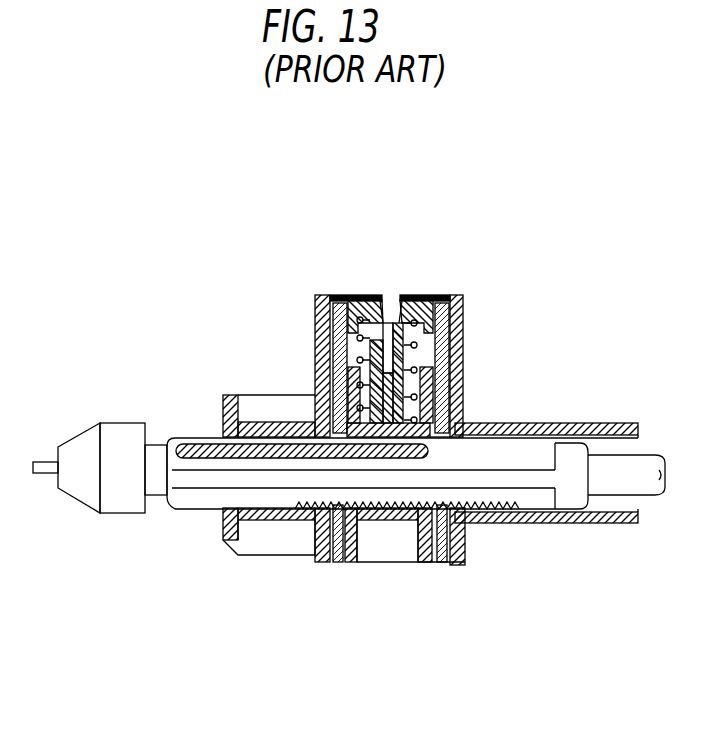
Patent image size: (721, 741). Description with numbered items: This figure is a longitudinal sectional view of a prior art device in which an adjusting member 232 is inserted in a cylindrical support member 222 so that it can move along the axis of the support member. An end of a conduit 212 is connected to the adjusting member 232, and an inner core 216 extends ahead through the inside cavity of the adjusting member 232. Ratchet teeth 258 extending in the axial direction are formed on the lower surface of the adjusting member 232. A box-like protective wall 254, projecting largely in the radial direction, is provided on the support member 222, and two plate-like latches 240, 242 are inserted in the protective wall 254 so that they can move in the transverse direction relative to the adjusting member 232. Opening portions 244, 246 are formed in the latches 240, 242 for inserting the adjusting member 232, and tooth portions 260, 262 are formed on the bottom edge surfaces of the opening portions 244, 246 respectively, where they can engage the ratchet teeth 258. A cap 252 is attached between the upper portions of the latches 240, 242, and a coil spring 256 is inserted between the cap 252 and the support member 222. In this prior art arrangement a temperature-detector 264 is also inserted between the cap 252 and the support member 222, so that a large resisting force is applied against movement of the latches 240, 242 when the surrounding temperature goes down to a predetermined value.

The conduit 212 is at (622, 495).
The inner core 216 is at (45, 460).
The cylindrical support member 222 is at (534, 423).
The adjusting member 232 is at (575, 425).
The latch 240 is at (314, 318).
The latch 242 is at (465, 335).
The opening portion 244 is at (312, 425).
The opening portion 246 is at (462, 415).
The cap 252 is at (425, 298).
The protective wall 254 is at (465, 300).
The coil spring 256 is at (316, 360).
The ratchet teeth 258 is at (498, 522).
The tooth portion 260 is at (300, 535).
The tooth portion 262 is at (428, 500).
The temperature-detector 264 is at (378, 300).